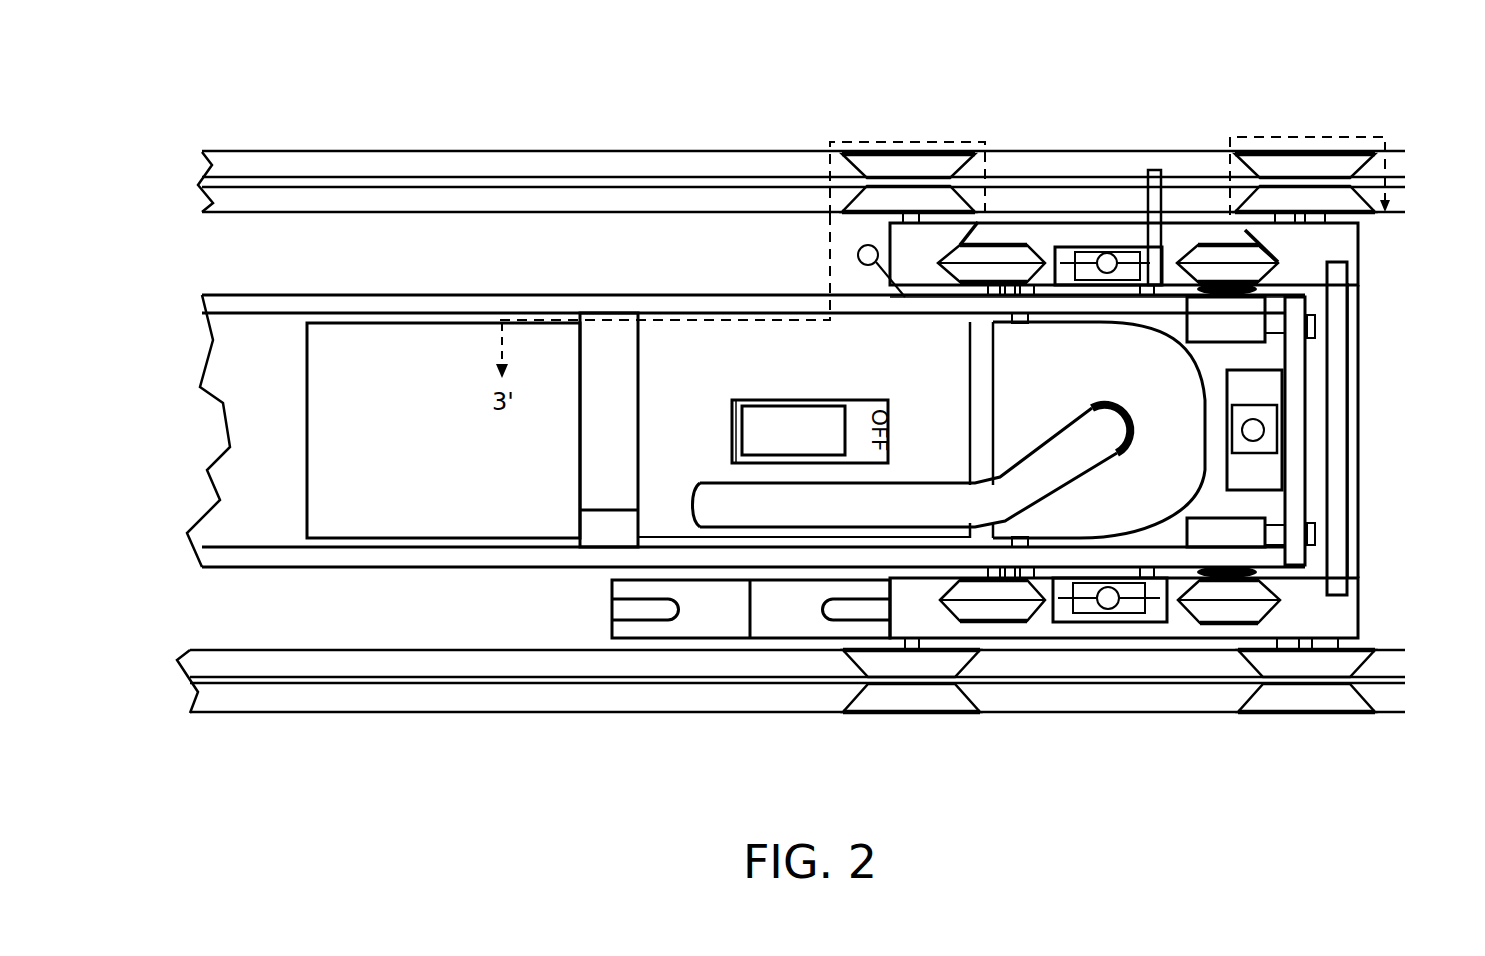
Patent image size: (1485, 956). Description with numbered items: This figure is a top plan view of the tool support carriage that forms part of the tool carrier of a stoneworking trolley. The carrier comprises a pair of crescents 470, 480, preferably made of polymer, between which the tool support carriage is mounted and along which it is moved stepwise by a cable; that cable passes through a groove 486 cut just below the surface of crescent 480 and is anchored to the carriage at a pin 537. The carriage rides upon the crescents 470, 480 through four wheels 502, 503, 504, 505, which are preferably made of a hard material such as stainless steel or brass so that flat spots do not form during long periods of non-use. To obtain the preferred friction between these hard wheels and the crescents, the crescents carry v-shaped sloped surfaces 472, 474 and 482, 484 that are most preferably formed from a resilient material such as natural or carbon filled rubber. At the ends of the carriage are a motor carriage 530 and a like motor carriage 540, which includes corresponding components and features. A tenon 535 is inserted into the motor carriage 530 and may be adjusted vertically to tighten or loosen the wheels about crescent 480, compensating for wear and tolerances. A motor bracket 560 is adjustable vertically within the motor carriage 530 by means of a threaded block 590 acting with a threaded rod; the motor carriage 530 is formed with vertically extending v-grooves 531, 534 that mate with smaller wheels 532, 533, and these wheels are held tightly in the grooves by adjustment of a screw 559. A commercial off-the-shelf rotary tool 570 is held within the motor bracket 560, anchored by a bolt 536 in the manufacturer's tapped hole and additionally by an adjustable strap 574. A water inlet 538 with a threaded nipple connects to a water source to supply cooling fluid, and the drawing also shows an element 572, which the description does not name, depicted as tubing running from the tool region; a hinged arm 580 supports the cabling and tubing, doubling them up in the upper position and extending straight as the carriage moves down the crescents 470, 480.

The crescent 470 is at (791, 730).
The v-shaped sloped surface 472 is at (492, 704).
The v-shaped sloped surface 474 is at (362, 668).
The crescent 480 is at (801, 131).
The v-shaped sloped surface 482 is at (602, 165).
The v-shaped sloped surface 484 is at (503, 203).
The groove 486 is at (550, 182).
The wheel 502 is at (892, 167).
The wheel 503 is at (922, 697).
The wheel 504 is at (1285, 163).
The wheel 505 is at (1323, 695).
The motor carriage 530 is at (1348, 243).
The v-groove 531 is at (1335, 275).
The wheel 532 is at (1213, 257).
The wheel 533 is at (962, 243).
The v-groove 534 is at (1013, 250).
The tenon 535 is at (1090, 250).
The bolt 536 is at (987, 297).
The pin 537 is at (1155, 243).
The water inlet 538 is at (868, 245).
The motor carriage 540 is at (1347, 627).
The screw 559 is at (1315, 333).
The motor bracket 560 is at (268, 303).
The rotary tool 570 is at (318, 375).
The hose 572 is at (1100, 430).
The adjustable strap 574 is at (590, 452).
The hinged arm 580 is at (697, 632).
The threaded block 590 is at (1263, 462).